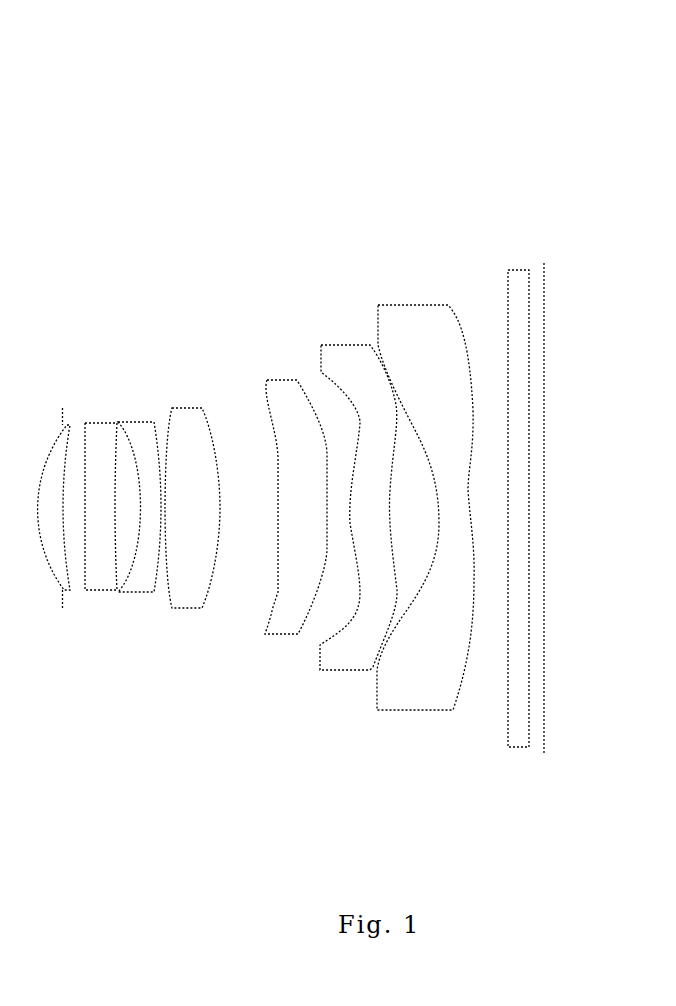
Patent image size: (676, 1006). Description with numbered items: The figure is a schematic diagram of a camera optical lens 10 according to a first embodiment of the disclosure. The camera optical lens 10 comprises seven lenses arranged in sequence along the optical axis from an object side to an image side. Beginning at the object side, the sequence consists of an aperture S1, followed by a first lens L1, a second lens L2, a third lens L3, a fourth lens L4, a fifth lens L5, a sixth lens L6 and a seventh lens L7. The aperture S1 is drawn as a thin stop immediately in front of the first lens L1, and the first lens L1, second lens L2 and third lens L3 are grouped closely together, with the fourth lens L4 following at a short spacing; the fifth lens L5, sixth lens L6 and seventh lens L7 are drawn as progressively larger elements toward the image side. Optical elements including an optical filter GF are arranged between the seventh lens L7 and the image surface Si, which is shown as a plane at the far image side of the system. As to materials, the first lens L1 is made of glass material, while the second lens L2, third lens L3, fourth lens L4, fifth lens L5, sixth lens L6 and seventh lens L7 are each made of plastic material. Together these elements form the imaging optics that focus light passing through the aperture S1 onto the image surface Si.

The camera optical lens 10 is at (336, 62).
The aperture S1 is at (51, 499).
The first lens L1 is at (61, 489).
The second lens L2 is at (101, 489).
The third lens L3 is at (139, 490).
The fourth lens L4 is at (192, 495).
The fifth lens L5 is at (296, 487).
The sixth lens L6 is at (358, 486).
The seventh lens L7 is at (425, 487).
The optical filter GF is at (513, 488).
The image surface Si is at (541, 484).